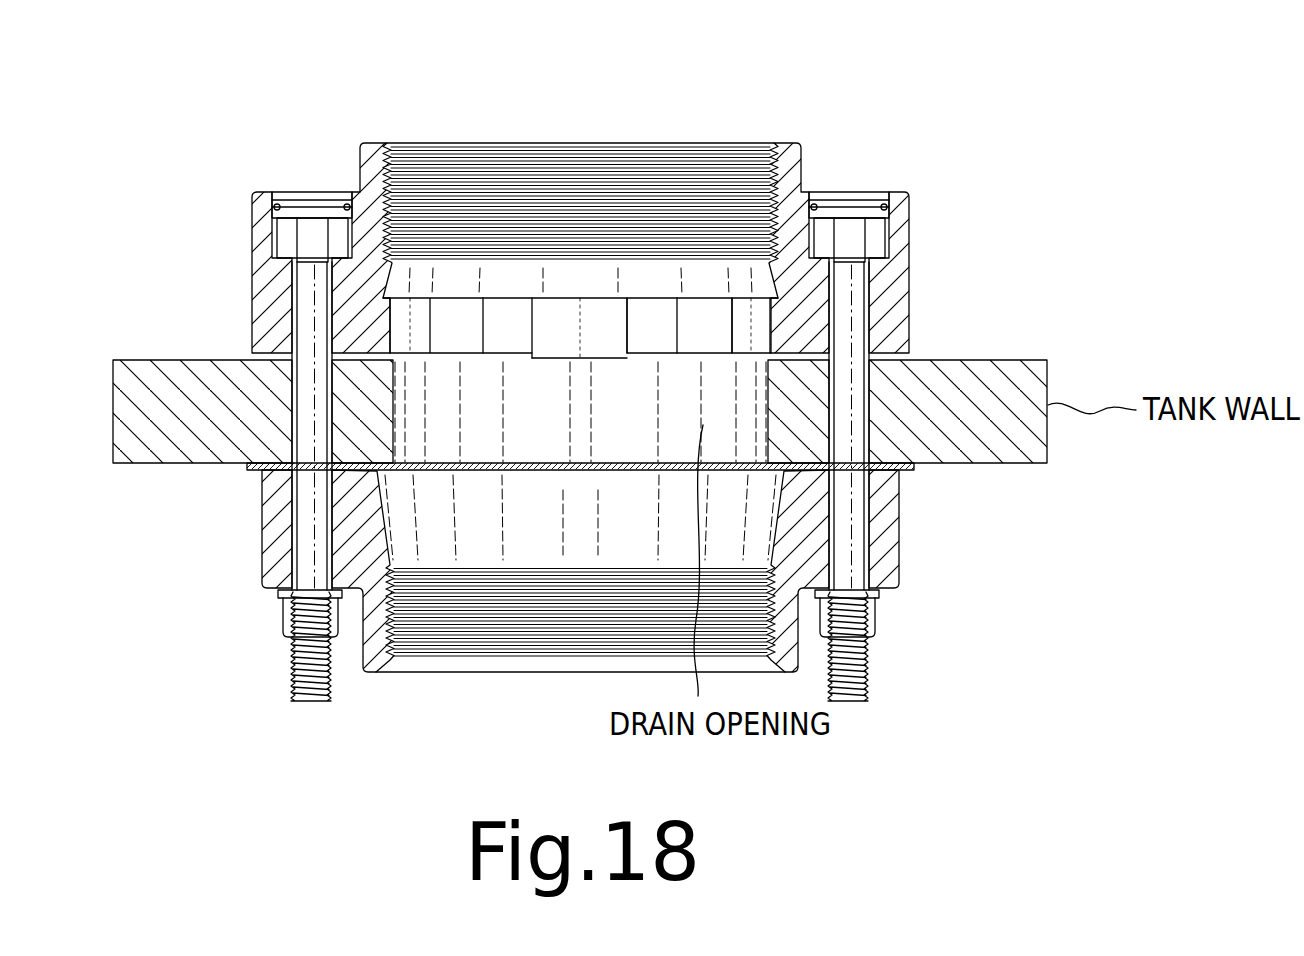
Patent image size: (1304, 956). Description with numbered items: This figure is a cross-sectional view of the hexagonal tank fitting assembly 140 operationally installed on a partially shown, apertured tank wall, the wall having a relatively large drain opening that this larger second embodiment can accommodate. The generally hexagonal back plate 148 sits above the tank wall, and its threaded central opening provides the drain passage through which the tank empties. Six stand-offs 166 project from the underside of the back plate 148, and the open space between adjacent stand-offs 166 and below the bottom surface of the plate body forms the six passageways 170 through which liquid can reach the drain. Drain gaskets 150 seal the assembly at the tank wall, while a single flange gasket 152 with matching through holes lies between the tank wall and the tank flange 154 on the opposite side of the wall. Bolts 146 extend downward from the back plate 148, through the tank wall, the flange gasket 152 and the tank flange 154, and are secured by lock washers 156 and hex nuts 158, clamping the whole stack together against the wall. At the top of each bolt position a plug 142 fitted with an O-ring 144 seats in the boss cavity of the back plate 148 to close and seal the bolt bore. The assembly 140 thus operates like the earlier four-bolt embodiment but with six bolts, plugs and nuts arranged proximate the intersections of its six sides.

The tank fitting assembly 140 is at (154, 160).
The plug 142 is at (851, 237).
The O-ring 144 is at (902, 197).
The bolt 146 is at (301, 416).
The back plate 148 is at (922, 302).
The drain gasket 150 is at (266, 354).
The flange gasket 152 is at (257, 471).
The tank flange 154 is at (914, 596).
The lock washer 156 is at (882, 601).
The hex nut 158 is at (870, 638).
The stand-off 166 is at (502, 330).
The passageway 170 is at (415, 327).